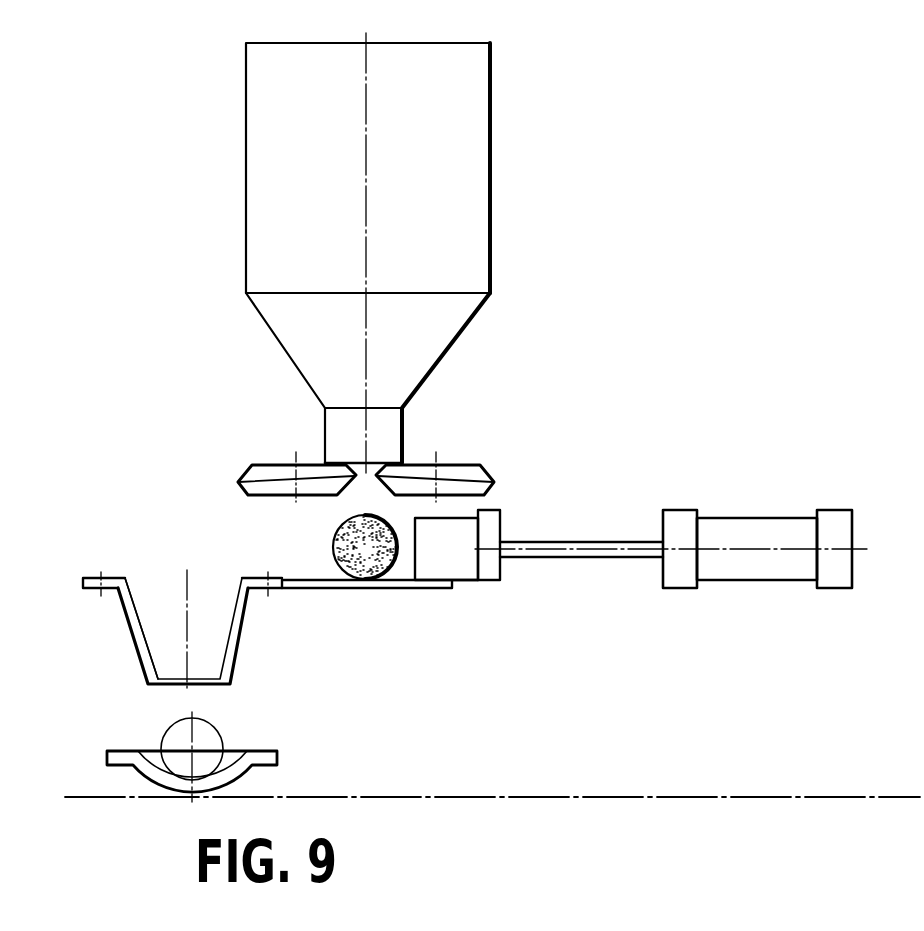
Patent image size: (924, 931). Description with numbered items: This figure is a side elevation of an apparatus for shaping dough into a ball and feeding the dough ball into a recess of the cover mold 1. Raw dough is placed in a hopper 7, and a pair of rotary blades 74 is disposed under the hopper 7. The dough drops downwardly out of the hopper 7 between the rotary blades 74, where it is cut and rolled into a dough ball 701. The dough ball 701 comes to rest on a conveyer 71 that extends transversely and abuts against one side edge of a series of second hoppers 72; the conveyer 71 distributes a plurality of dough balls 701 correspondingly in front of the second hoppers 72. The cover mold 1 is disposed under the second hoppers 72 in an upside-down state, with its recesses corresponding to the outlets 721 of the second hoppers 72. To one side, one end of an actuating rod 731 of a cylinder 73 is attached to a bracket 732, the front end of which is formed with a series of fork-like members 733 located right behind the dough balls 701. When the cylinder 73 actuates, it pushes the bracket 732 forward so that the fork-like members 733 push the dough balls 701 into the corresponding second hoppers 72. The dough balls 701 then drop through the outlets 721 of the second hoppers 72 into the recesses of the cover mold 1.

The cover mold 1 is at (140, 773).
The hopper 7 is at (473, 263).
The conveyer 71 is at (307, 588).
The second hopper 72 is at (93, 582).
The outlet 721 is at (178, 677).
The cylinder 73 is at (797, 530).
The actuating rod 731 is at (618, 545).
The bracket 732 is at (490, 567).
The fork-like member 733 is at (422, 570).
The rotary blade 74 is at (262, 472).
The dough ball 701 is at (363, 572).